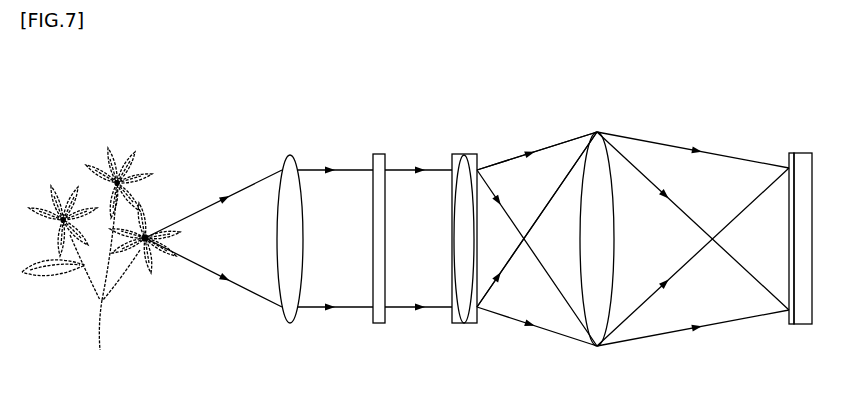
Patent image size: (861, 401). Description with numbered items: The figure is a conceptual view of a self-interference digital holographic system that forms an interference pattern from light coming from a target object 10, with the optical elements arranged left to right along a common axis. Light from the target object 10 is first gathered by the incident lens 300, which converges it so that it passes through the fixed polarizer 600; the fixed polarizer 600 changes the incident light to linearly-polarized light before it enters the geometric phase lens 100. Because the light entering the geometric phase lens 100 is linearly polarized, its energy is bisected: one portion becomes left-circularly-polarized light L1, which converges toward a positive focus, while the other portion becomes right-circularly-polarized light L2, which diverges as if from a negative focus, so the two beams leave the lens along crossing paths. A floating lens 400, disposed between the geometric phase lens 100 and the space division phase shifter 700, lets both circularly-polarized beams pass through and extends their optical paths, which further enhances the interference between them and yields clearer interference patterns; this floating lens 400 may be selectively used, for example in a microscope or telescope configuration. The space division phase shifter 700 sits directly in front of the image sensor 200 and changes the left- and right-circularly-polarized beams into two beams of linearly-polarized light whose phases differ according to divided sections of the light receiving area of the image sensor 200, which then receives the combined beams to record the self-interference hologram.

The target object 10 is at (101, 262).
The incident lens 300 is at (287, 153).
The fixed polarizer 600 is at (374, 153).
The geometric phase lens 100 is at (462, 153).
The right-circularly-polarized light L2 is at (511, 149).
The left-circularly-polarized light L1 is at (562, 170).
The floating lens 400 is at (596, 132).
The space division phase shifter 700 is at (791, 151).
The image sensor 200 is at (804, 151).